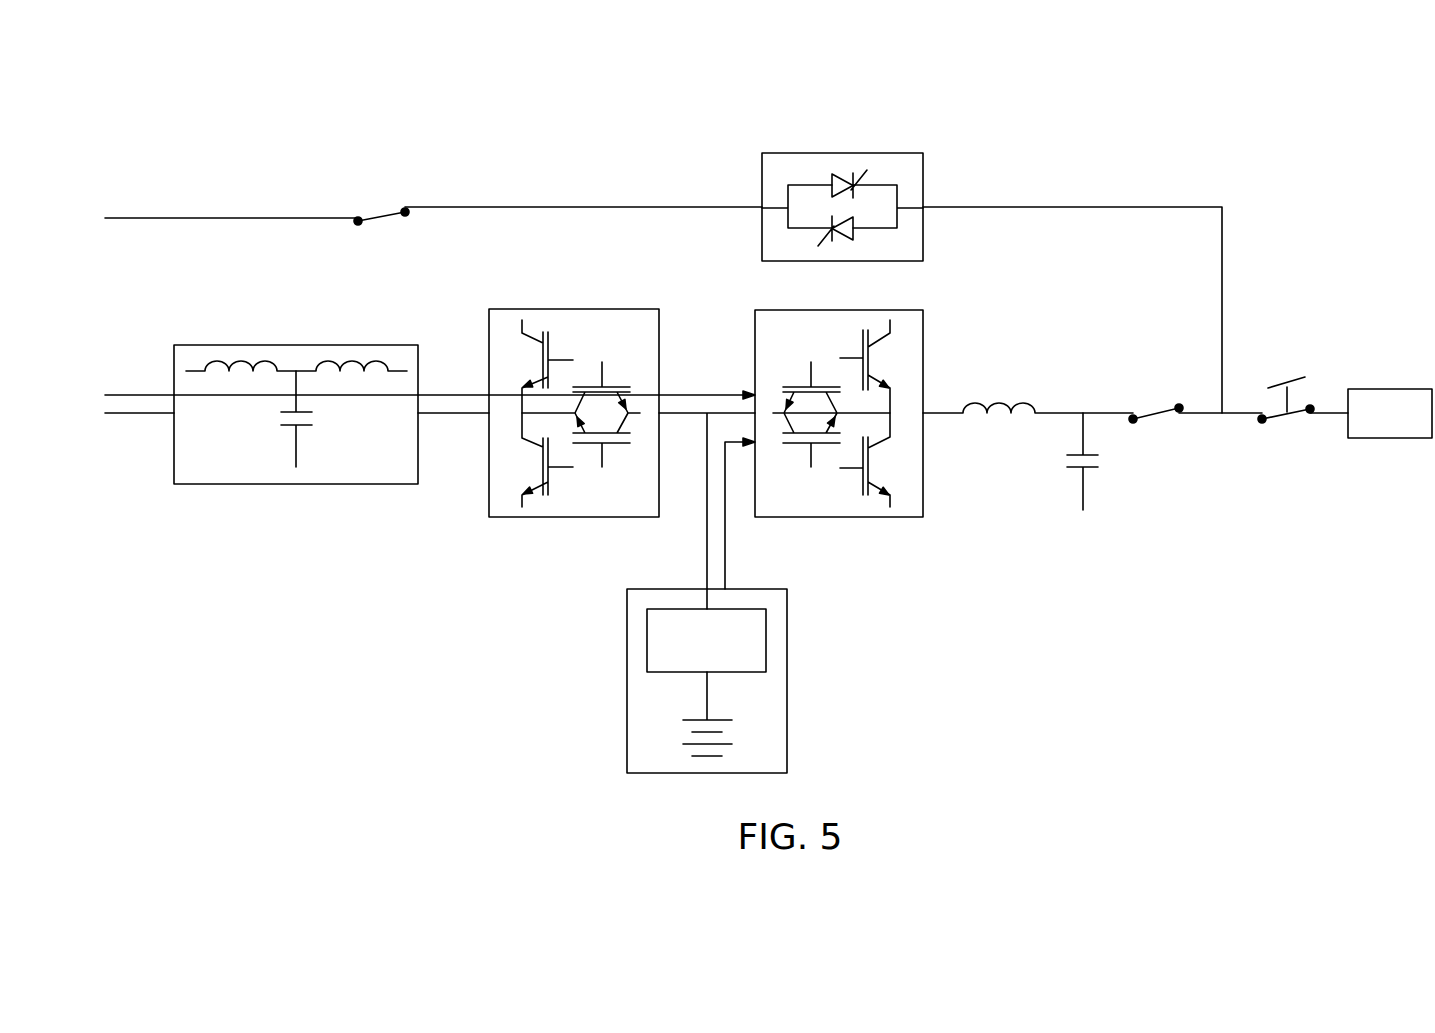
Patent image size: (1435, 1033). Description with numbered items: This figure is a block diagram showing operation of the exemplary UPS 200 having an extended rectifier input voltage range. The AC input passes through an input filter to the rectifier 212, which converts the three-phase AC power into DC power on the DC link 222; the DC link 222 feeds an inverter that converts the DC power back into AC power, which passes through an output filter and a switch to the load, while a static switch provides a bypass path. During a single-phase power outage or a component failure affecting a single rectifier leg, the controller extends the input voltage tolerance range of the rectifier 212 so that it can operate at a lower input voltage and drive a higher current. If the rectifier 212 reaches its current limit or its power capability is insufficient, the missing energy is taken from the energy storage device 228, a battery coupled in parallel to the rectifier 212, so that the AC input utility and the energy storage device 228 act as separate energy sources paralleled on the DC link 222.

The uninterrupted power supply 200 is at (368, 92).
The rectifier 212 is at (572, 308).
The DC link 222 is at (686, 410).
The energy storage device 228 is at (787, 644).